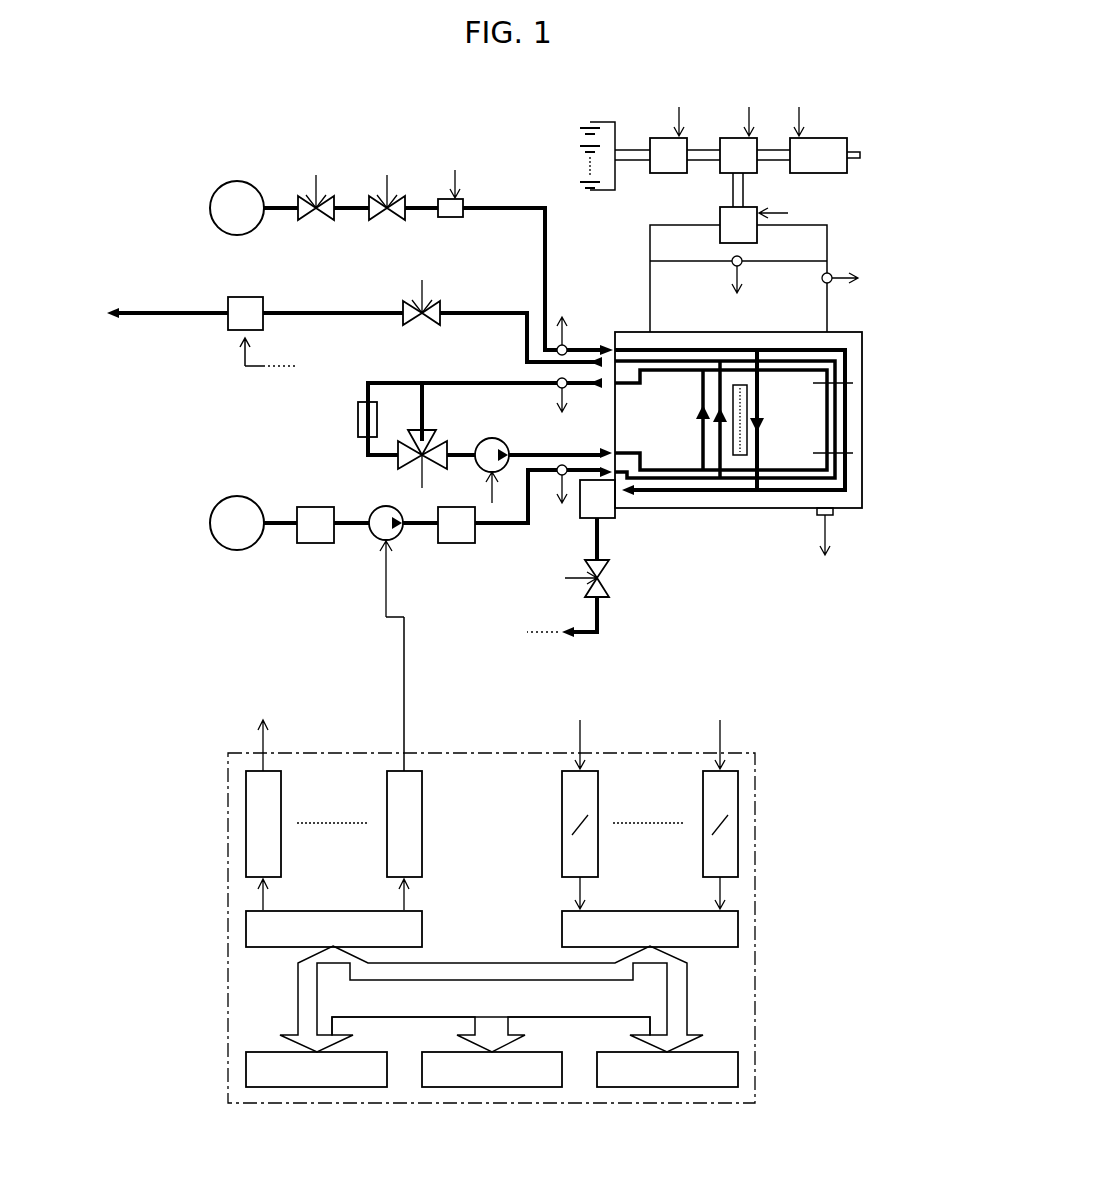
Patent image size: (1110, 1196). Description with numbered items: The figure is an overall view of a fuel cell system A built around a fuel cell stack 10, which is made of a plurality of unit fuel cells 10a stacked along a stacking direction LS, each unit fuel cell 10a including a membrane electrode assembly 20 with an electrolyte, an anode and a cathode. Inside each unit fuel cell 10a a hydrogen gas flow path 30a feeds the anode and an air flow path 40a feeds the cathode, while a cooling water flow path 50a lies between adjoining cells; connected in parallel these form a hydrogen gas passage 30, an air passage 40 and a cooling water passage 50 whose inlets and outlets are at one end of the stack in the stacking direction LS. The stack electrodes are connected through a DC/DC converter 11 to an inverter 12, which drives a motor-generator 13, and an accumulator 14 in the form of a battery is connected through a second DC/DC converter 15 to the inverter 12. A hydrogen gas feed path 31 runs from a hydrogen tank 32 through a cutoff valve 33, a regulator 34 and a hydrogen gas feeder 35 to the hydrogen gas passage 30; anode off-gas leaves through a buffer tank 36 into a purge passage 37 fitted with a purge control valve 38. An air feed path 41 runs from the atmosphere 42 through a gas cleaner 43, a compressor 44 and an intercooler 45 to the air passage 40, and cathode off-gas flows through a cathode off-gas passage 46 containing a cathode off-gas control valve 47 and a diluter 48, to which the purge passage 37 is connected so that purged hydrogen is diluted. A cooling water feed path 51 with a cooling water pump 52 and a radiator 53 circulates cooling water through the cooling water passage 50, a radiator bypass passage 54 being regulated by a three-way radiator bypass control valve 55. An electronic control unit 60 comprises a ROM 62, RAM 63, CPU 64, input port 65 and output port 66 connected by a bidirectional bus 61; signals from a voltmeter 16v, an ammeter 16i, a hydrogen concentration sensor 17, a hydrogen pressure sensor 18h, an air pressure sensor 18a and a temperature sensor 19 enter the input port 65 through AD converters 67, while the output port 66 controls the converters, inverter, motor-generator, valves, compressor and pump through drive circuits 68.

The fuel cell system A is at (195, 124).
The fuel cell stack 10 is at (862, 348).
The unit fuel cell 10a is at (747, 520).
The DC/DC converter 11 is at (720, 218).
The inverter 12 is at (738, 137).
The motor-generator 13 is at (842, 137).
The accumulator 14 is at (580, 128).
The DC/DC converter 15 is at (668, 137).
The voltmeter 16v is at (732, 259).
The ammeter 16i is at (832, 275).
The hydrogen concentration sensor 17 is at (835, 514).
The hydrogen pressure sensor 18h is at (572, 335).
The air pressure sensor 18a is at (558, 495).
The temperature sensor 19 is at (555, 382).
The membrane electrode assembly 20 is at (740, 458).
The hydrogen gas passage 30 is at (795, 360).
The hydrogen gas flow path 30a is at (762, 345).
The hydrogen gas feed path 31 is at (530, 207).
The hydrogen tank 32 is at (237, 181).
The cutoff valve 33 is at (300, 198).
The regulator 34 is at (370, 198).
The hydrogen gas feeder 35 is at (442, 198).
The buffer tank 36 is at (615, 514).
The purge passage 37 is at (240, 364).
The purge control valve 38 is at (610, 590).
The air passage 40 is at (675, 368).
The air flow path 40a is at (720, 355).
The air feed path 41 is at (516, 524).
The atmosphere 42 is at (235, 550).
The gas cleaner 43 is at (312, 544).
The compressor 44 is at (372, 550).
The intercooler 45 is at (448, 544).
The cathode off-gas passage 46 is at (527, 312).
The cathode off-gas control valve 47 is at (405, 303).
The diluter 48 is at (240, 296).
The cooling water passage 50 is at (668, 460).
The cooling water flow path 50a is at (700, 472).
The cooling water feed path 51 is at (555, 452).
The cooling water pump 52 is at (478, 468).
The radiator 53 is at (357, 422).
The radiator bypass passage 54 is at (430, 405).
The radiator bypass control valve 55 is at (398, 462).
The electronic control unit 60 is at (228, 790).
The bidirectional bus 61 is at (497, 980).
The ROM 62 is at (370, 1088).
The RAM 63 is at (545, 1088).
The CPU 64 is at (720, 1088).
The input port 65 is at (562, 928).
The output port 66 is at (422, 928).
The AD converter 67 is at (703, 787).
The drive circuit 68 is at (386, 787).
The stacking direction LS is at (883, 418).